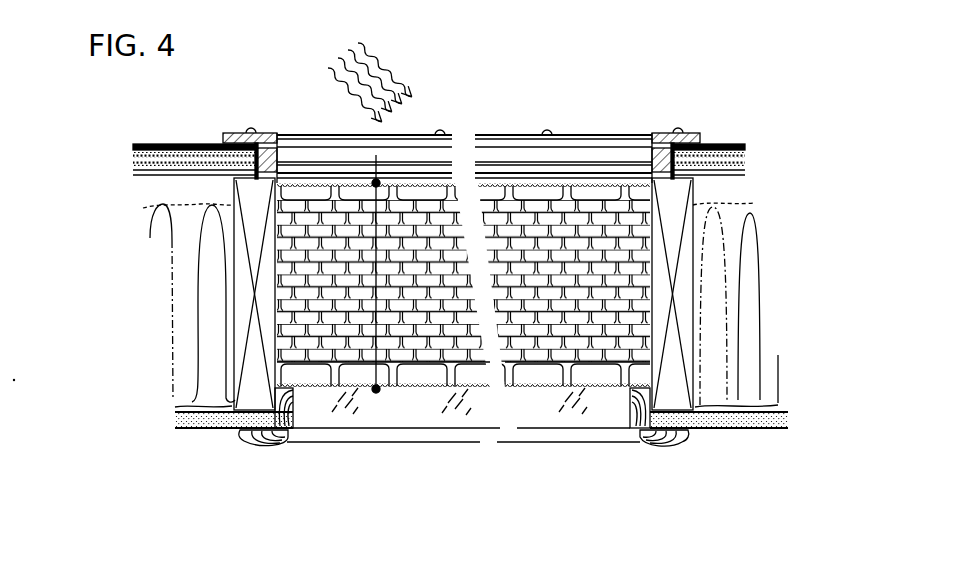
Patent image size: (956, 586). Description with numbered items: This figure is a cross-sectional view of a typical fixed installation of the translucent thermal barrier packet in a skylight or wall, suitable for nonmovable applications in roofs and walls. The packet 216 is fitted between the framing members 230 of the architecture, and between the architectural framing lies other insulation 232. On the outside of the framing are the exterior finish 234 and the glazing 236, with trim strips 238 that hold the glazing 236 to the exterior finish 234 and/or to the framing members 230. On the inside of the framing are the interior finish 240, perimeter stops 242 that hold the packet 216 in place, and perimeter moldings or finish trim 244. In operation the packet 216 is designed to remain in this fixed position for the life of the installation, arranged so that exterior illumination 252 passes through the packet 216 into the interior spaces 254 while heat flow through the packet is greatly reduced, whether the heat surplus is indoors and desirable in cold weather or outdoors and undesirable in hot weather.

The packet 216 is at (376, 393).
The framing members 230 is at (245, 191).
The insulation 232 is at (187, 252).
The exterior finish 234 is at (133, 165).
The glazing 236 is at (311, 132).
The trim strips 238 is at (231, 130).
The interior finish 240 is at (173, 418).
The perimeter stops 242 is at (299, 410).
The perimeter moldings or finish trim 244 is at (250, 444).
The exterior illumination 252 is at (363, 70).
The interior spaces 254 is at (463, 432).